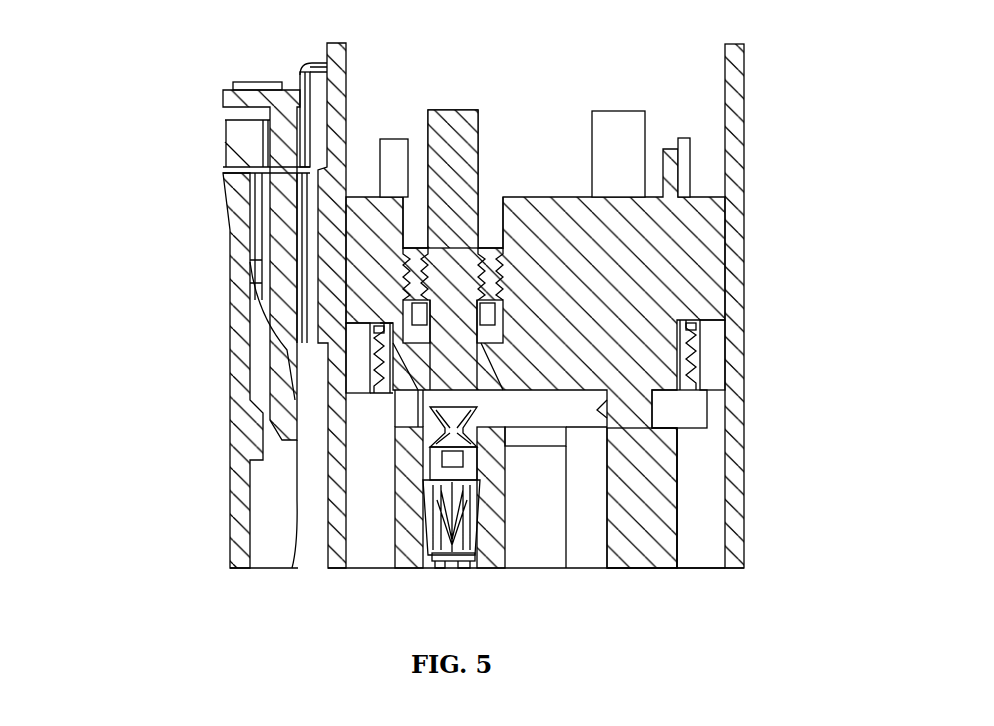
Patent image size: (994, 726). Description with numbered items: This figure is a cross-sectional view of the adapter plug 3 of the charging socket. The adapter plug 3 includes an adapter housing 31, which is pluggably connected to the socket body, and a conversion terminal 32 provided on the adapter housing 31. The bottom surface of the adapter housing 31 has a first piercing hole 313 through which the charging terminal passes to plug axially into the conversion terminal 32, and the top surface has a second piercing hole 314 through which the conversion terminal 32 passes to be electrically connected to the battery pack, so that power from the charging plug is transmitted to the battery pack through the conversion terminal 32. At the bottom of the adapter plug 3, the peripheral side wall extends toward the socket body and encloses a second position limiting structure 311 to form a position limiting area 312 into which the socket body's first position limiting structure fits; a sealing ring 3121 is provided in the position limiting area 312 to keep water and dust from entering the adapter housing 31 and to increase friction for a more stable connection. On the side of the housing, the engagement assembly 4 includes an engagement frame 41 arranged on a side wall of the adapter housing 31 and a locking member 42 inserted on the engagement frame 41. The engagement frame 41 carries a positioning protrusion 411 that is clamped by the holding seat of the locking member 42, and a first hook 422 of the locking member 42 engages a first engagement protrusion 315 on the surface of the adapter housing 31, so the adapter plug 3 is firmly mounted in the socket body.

The adapter plug 3 is at (745, 228).
The adapter housing 31 is at (700, 268).
The second position limiting structure 311 is at (653, 480).
The position limiting area 312 is at (702, 522).
The first piercing hole 313 is at (483, 565).
The second piercing hole 314 is at (488, 198).
The first engagement protrusion 315 is at (263, 443).
The sealing ring 3121 is at (697, 348).
The conversion terminal 32 is at (457, 494).
The engagement assembly 4 is at (95, 32).
The engagement frame 41 is at (318, 80).
The positioning protrusion 411 is at (283, 157).
The locking member 42 is at (250, 142).
The first hook 422 is at (280, 330).